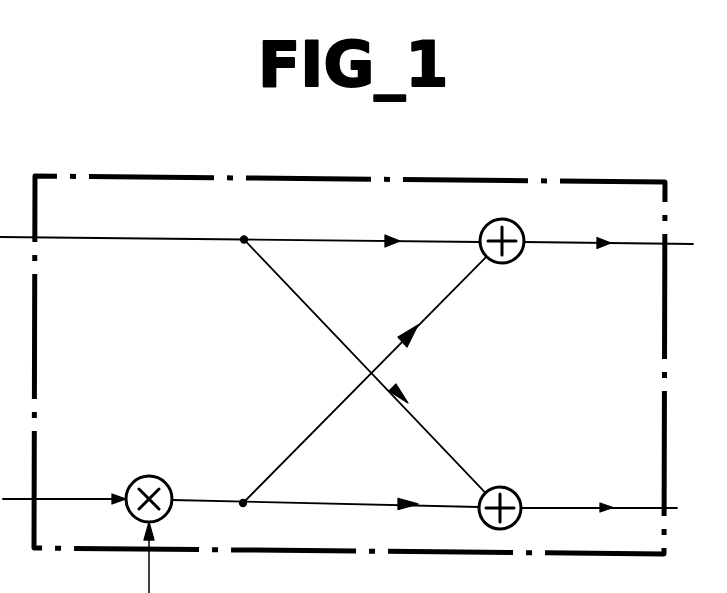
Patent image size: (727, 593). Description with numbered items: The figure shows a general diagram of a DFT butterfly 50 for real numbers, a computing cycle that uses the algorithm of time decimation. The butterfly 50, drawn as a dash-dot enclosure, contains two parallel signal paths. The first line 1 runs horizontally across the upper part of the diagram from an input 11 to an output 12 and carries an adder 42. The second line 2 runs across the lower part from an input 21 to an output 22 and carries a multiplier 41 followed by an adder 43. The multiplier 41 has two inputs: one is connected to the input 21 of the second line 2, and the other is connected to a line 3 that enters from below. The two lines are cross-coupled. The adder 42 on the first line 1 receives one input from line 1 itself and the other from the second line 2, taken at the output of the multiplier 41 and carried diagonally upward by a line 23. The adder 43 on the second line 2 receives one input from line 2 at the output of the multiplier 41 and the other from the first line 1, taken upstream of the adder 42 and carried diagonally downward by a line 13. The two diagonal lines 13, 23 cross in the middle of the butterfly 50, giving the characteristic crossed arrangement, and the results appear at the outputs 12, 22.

The first line 1 is at (296, 240).
The second line 2 is at (344, 504).
The line 3 is at (147, 573).
The input 11 is at (178, 237).
The output 12 is at (573, 242).
The line 13 is at (336, 334).
The input 21 is at (63, 498).
The output 22 is at (558, 508).
The line 23 is at (457, 293).
The multiplier 41 is at (143, 481).
The adder 42 is at (487, 229).
The adder 43 is at (503, 487).
The DFT butterfly 50 is at (587, 182).